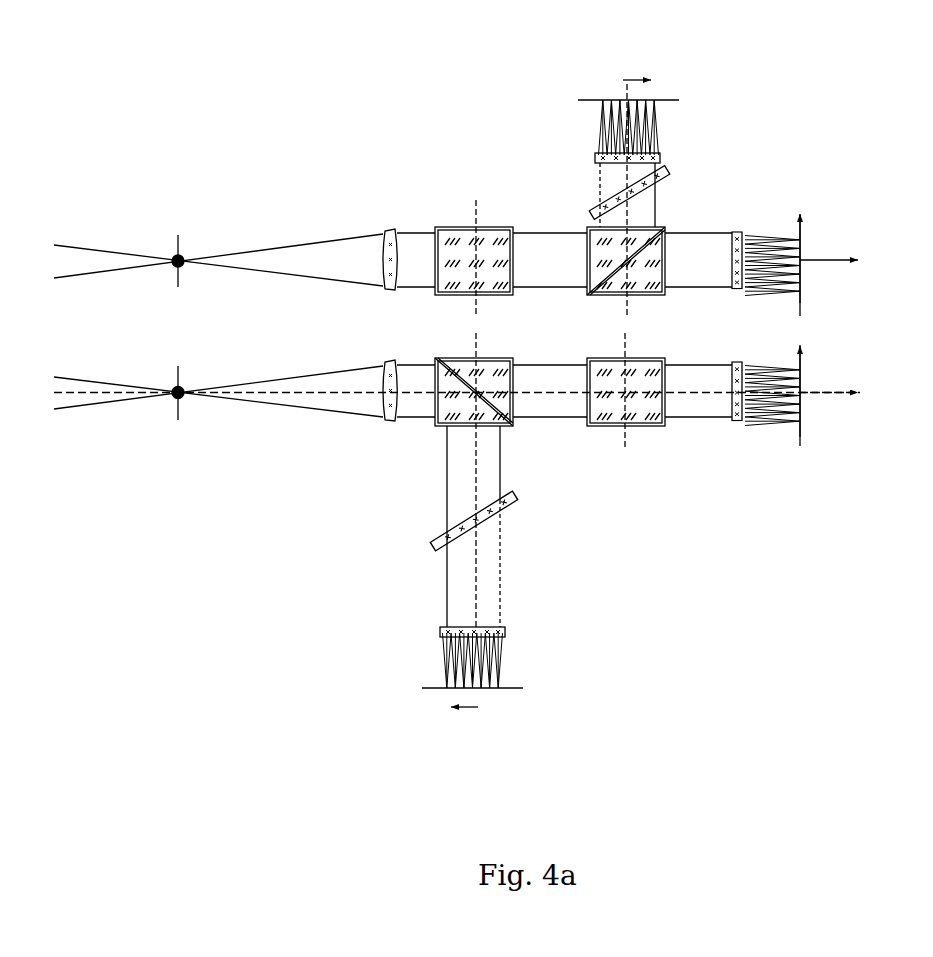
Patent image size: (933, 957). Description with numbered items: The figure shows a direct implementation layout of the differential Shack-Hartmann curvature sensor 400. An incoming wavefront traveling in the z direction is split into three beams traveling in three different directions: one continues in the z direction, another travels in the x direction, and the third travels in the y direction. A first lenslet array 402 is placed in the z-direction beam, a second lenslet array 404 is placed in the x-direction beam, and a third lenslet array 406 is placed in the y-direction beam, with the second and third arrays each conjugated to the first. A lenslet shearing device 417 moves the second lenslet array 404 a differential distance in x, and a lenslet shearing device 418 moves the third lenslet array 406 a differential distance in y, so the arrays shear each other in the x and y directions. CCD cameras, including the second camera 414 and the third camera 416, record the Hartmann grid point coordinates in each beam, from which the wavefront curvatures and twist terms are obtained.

The differential Shack-Hartmann curvature sensor 400 is at (320, 107).
The first lenslet array 402 is at (730, 434).
The second lenslet array 404 is at (599, 157).
The third lenslet array 406 is at (439, 633).
The second camera 414 is at (681, 89).
The third camera 416 is at (554, 687).
The lenslet shearing device (x) 417 is at (586, 214).
The lenslet shearing device (y) 418 is at (440, 434).